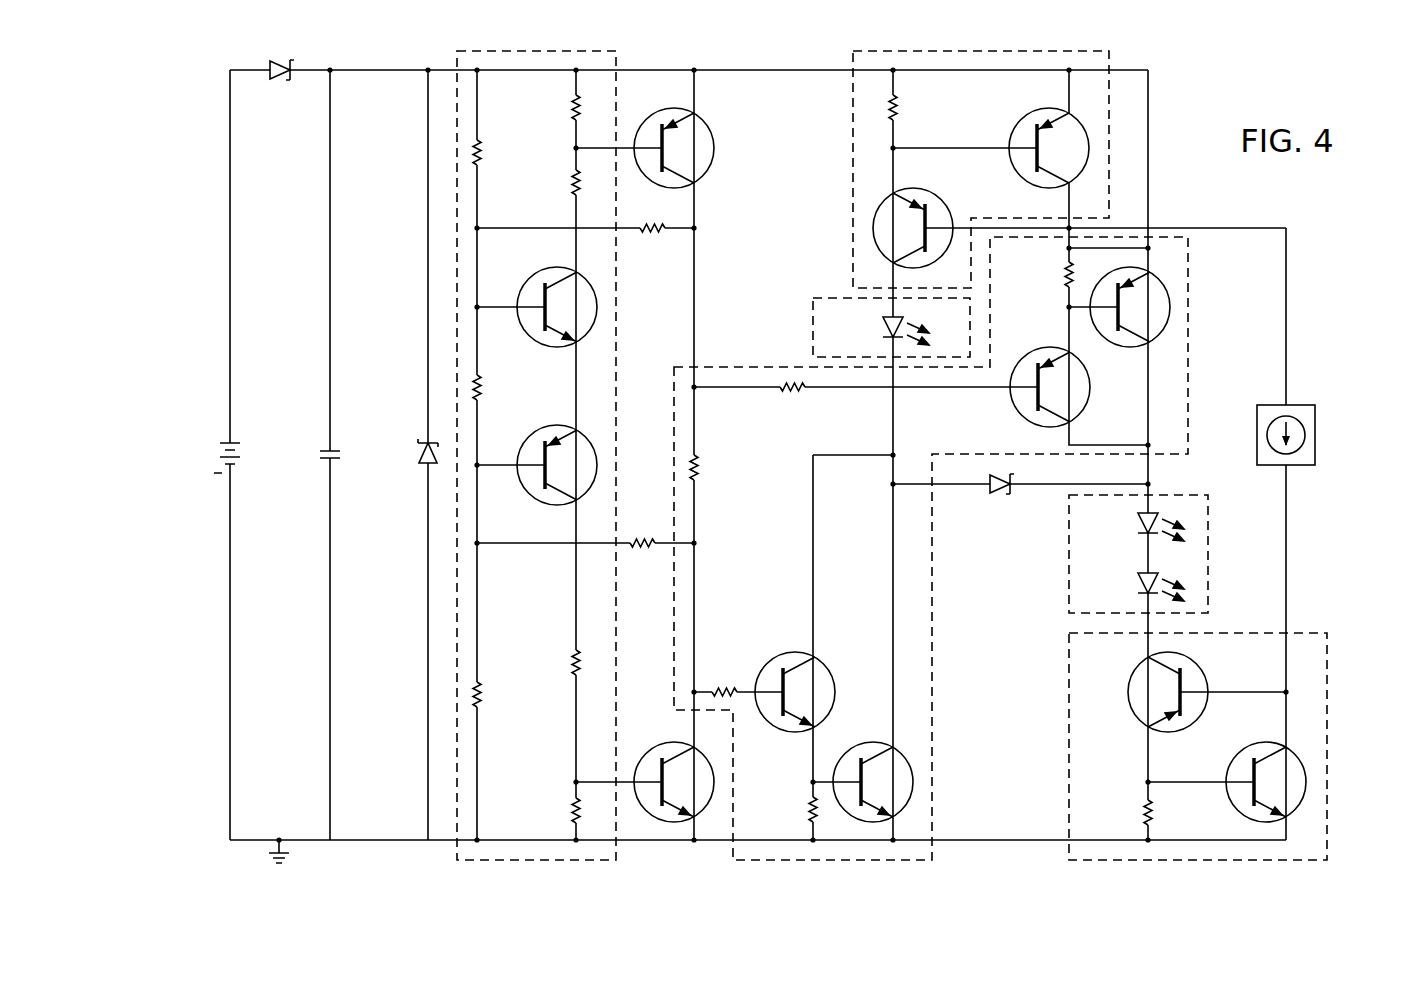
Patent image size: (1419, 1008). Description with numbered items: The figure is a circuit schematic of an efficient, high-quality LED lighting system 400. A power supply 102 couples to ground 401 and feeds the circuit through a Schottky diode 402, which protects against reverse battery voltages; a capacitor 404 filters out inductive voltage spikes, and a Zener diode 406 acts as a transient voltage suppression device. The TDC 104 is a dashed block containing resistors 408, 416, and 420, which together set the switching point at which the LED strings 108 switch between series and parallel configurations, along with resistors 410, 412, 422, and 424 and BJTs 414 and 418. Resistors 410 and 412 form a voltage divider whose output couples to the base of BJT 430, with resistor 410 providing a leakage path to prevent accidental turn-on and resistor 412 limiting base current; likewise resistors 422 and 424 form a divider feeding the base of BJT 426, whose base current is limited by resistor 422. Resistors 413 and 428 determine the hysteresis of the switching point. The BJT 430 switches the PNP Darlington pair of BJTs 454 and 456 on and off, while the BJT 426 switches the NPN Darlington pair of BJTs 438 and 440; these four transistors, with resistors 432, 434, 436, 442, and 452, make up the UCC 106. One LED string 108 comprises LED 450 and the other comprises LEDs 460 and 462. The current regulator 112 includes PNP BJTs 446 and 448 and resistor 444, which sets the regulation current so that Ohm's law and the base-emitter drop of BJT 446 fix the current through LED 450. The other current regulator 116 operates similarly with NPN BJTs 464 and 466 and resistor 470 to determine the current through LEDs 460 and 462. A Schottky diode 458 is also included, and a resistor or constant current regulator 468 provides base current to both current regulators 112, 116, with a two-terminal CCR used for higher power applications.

The LED lighting system 400 is at (205, 118).
The ground 401 is at (268, 857).
The Schottky diode 402 is at (298, 86).
The power supply 102 is at (215, 455).
The capacitor 404 is at (320, 457).
The Zener diode 406 is at (418, 450).
The TDC 104 is at (620, 357).
The resistor 408 is at (482, 152).
The resistor 410 is at (568, 107).
The resistor 412 is at (568, 187).
The resistor 413 is at (656, 237).
The BJT 414 is at (540, 274).
The resistor 416 is at (482, 390).
The BJT 418 is at (532, 500).
The resistor 420 is at (482, 697).
The resistor 422 is at (568, 661).
The resistor 424 is at (568, 812).
The BJT 426 is at (666, 744).
The resistor 428 is at (652, 553).
The BJT 430 is at (688, 128).
The resistor 432 is at (700, 468).
The resistor 434 is at (798, 395).
The resistor 436 is at (727, 684).
The BJT 438 is at (783, 733).
The BJT 440 is at (875, 742).
The resistor 442 is at (808, 812).
The resistor 444 is at (899, 110).
The BJT 446 is at (1022, 123).
The BJT 448 is at (935, 208).
The LED 450 is at (885, 324).
The resistor 452 is at (1066, 278).
The BJT 454 is at (1133, 350).
The BJT 456 is at (1012, 398).
The Schottky diode 458 is at (996, 500).
The LED 460 is at (1136, 526).
The LED 462 is at (1136, 586).
The BJT 464 is at (1185, 728).
The BJT 466 is at (1250, 748).
The resistor or constant current regulator (CCR) 468 is at (1317, 438).
The resistor 470 is at (1140, 815).
The UCC 106 is at (1192, 334).
The LED strings 108 is at (812, 330).
The current regulator 112 is at (850, 146).
The current regulator 116 is at (1330, 760).